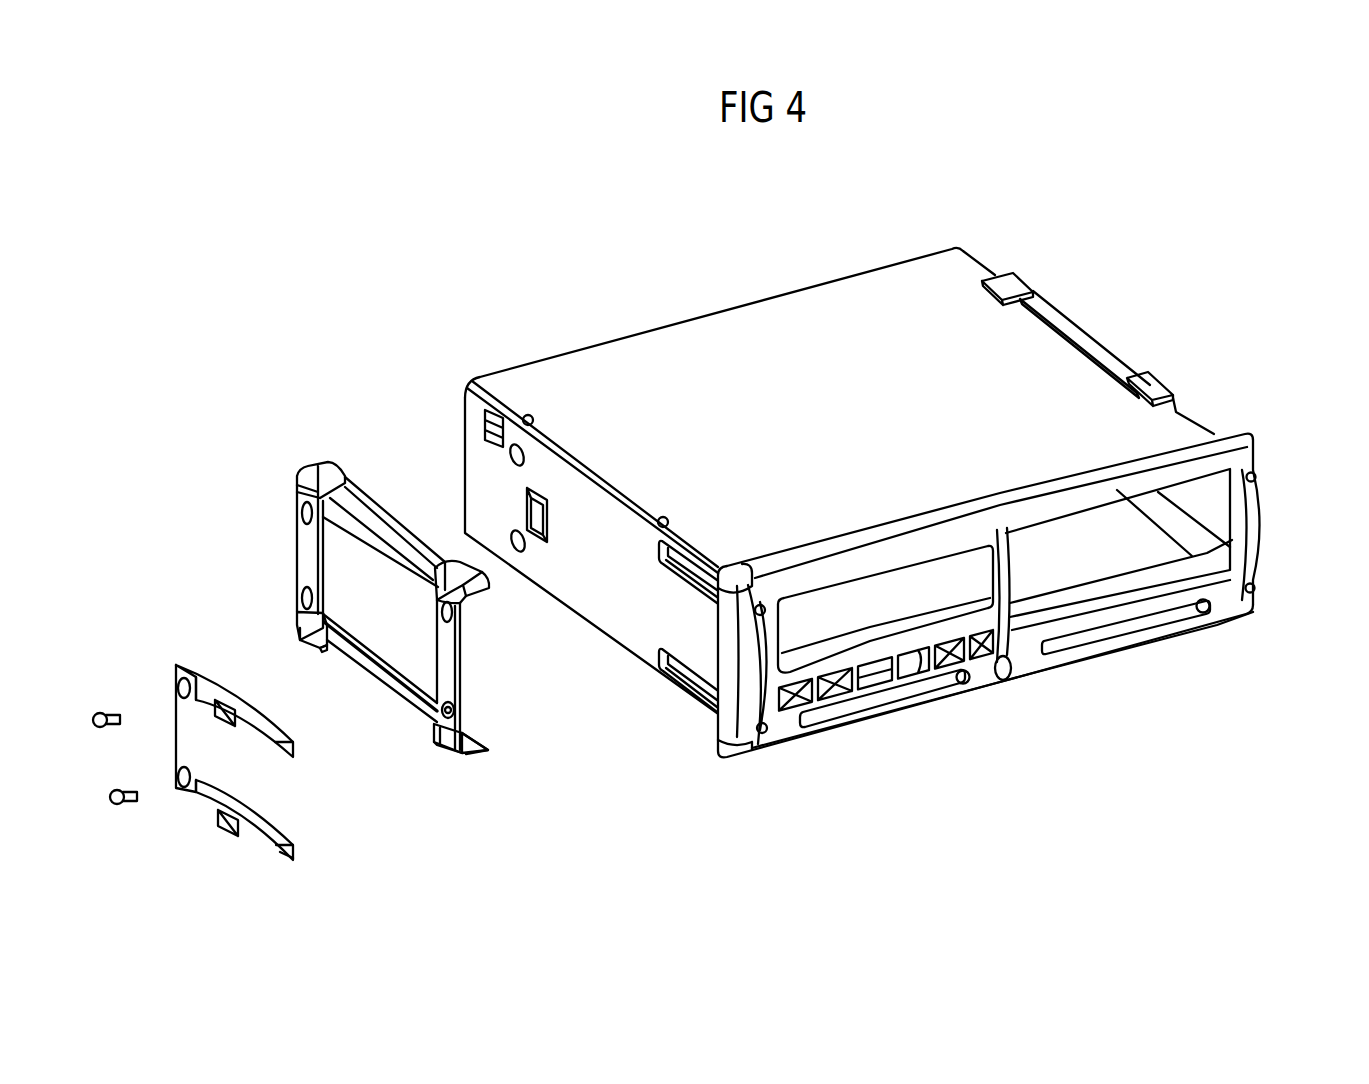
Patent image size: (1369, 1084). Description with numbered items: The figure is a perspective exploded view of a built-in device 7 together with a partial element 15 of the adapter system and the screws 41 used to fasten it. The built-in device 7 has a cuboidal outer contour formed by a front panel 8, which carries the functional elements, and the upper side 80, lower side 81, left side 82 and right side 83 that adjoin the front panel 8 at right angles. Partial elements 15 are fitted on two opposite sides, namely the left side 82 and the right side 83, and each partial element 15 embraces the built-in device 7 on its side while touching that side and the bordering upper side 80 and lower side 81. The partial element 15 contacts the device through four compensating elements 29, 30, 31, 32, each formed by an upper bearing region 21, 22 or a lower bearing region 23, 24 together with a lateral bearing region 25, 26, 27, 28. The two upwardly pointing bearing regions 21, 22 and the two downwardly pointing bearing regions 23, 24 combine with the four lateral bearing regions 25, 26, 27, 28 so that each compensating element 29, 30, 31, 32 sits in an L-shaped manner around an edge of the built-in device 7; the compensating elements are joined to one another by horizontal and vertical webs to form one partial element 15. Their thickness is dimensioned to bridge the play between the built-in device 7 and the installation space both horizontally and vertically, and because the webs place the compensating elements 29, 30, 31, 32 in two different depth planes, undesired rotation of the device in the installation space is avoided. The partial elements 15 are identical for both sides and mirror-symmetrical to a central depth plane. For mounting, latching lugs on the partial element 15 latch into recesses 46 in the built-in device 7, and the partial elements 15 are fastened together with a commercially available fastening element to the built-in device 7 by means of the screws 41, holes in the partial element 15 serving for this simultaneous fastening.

The built-in device 7 is at (946, 305).
The front panel 8 is at (1215, 455).
The partial element 15 is at (1075, 330).
The upper bearing region 21 is at (320, 466).
The upper bearing region 22 is at (463, 563).
The lower bearing region 23 is at (320, 648).
The lower bearing region 24 is at (473, 752).
The lateral bearing region 25 is at (300, 490).
The lateral bearing region 26 is at (462, 600).
The lateral bearing region 27 is at (462, 717).
The lateral bearing region 28 is at (297, 618).
The compensating element 29 is at (1010, 283).
The compensating element 30 is at (1145, 385).
The compensating element 31 is at (443, 752).
The compensating element 32 is at (300, 633).
The screw 41 is at (100, 712).
The recess 46 is at (527, 414).
The upper side 80 is at (815, 338).
The lower side 81 is at (1014, 720).
The left side 82 is at (618, 607).
The right side 83 is at (1280, 518).